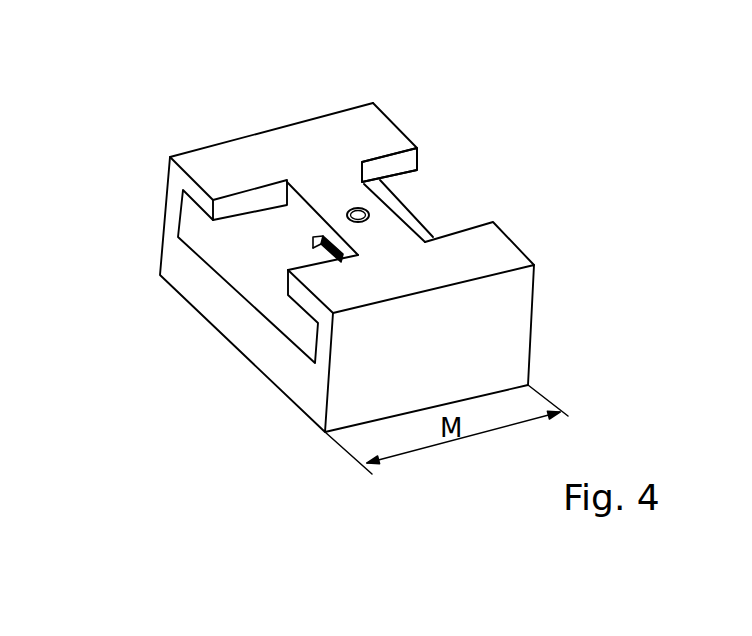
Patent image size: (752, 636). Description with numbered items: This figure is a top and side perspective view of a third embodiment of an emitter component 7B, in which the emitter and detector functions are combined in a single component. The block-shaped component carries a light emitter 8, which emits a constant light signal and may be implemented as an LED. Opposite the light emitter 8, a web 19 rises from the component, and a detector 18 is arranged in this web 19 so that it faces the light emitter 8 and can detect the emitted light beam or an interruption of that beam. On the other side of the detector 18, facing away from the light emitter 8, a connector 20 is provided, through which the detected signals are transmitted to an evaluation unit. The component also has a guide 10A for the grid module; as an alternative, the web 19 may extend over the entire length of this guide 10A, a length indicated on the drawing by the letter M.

The connector 20 is at (352, 212).
The web 19 is at (347, 172).
The detector 18 is at (375, 213).
The light emitter 8 is at (313, 245).
The guide 10A is at (302, 330).
The emitter component 7B is at (118, 85).